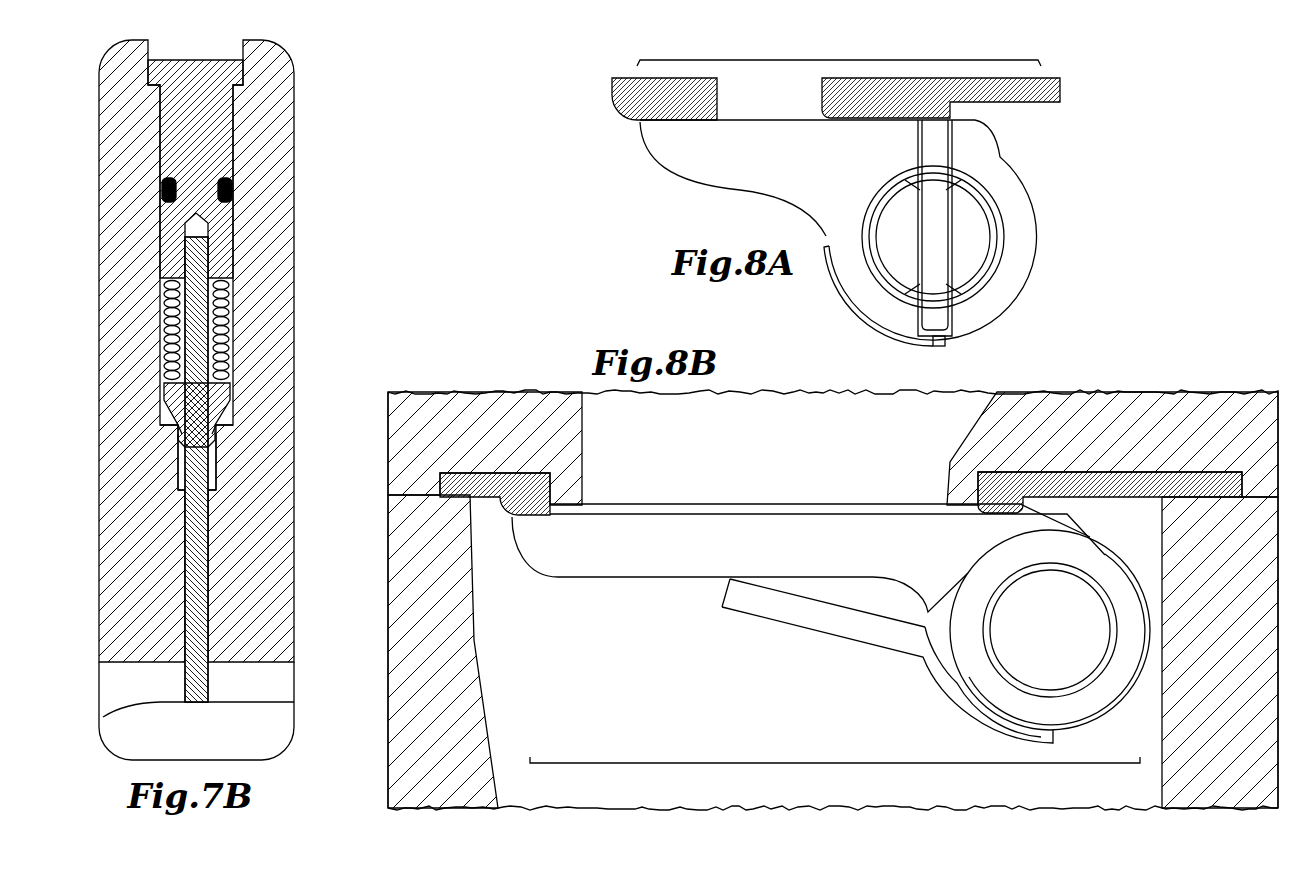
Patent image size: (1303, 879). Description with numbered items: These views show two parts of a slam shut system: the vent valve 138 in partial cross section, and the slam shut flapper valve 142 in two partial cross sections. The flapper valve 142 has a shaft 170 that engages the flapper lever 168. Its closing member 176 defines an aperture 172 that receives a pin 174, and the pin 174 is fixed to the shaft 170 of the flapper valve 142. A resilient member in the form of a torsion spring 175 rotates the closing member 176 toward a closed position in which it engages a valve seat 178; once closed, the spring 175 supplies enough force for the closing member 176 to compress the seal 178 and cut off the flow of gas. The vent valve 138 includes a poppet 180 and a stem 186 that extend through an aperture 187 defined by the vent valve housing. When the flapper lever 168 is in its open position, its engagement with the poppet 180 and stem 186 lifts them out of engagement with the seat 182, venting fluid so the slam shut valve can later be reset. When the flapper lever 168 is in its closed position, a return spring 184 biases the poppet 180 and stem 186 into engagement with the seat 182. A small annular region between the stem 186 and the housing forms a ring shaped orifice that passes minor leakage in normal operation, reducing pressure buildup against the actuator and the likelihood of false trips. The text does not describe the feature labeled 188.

In FIG. 7B, the vent valve 138 is at (303, 217).
In FIG. 7B, the flapper lever 168 is at (265, 748).
In FIG. 7B, the poppet 180 is at (225, 412).
In FIG. 7B, the seat 182 is at (223, 430).
In FIG. 7B, the return spring 184 is at (220, 295).
In FIG. 7B, the stem 186 is at (205, 575).
In FIG. 7B, the aperture 187 is at (224, 332).
In FIG. 7B, the bore 188 is at (212, 540).
In FIG. 8A, the flapper valve 142 is at (839, 51).
In FIG. 8B, the flapper valve 142 is at (833, 600).
In FIG. 8A, the shaft 170 is at (980, 232).
In FIG. 8B, the shaft 170 is at (1050, 630).
In FIG. 8A, the aperture 172 is at (948, 335).
In FIG. 8A, the pin 174 is at (940, 263).
In FIG. 8B, the torsion spring 175 is at (777, 613).
In FIG. 8A, the closing member 176 is at (692, 162).
In FIG. 8B, the closing member 176 is at (594, 580).
In FIG. 8A, the valve seat 178 is at (620, 106).
In FIG. 8B, the valve seat 178 is at (535, 520).